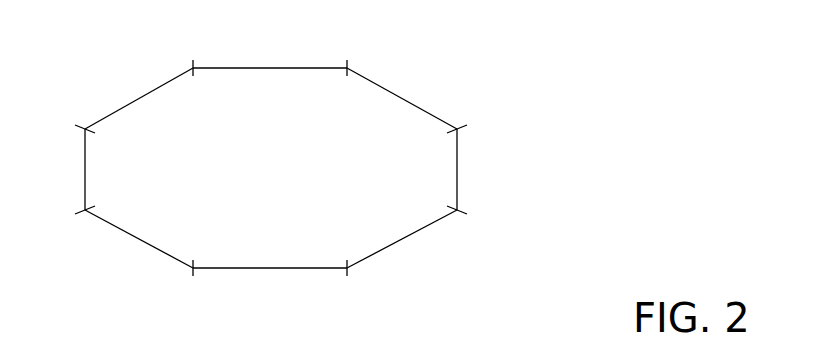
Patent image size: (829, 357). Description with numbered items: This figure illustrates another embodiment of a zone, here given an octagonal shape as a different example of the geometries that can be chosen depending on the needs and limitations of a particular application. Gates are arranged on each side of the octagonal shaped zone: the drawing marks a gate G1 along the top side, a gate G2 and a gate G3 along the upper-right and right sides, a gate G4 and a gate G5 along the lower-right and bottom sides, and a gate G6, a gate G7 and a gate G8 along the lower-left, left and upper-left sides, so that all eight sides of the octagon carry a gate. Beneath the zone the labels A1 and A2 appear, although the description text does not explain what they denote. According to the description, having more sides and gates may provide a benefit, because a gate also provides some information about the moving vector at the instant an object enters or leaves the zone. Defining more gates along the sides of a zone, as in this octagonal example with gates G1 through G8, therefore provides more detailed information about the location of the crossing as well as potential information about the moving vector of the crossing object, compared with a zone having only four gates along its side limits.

The first gripping portion G1 is at (280, 68).
The second gripping portion G2 is at (412, 103).
The third gripping portion G3 is at (458, 172).
The fourth gripping portion G4 is at (413, 233).
The fifth gripping portion G5 is at (272, 268).
The sixth gripping portion G6 is at (137, 238).
The seventh gripping portion G7 is at (85, 165).
The eighth gripping portion G8 is at (145, 95).
The first area A1 is at (169, 350).
The second area A2 is at (434, 350).